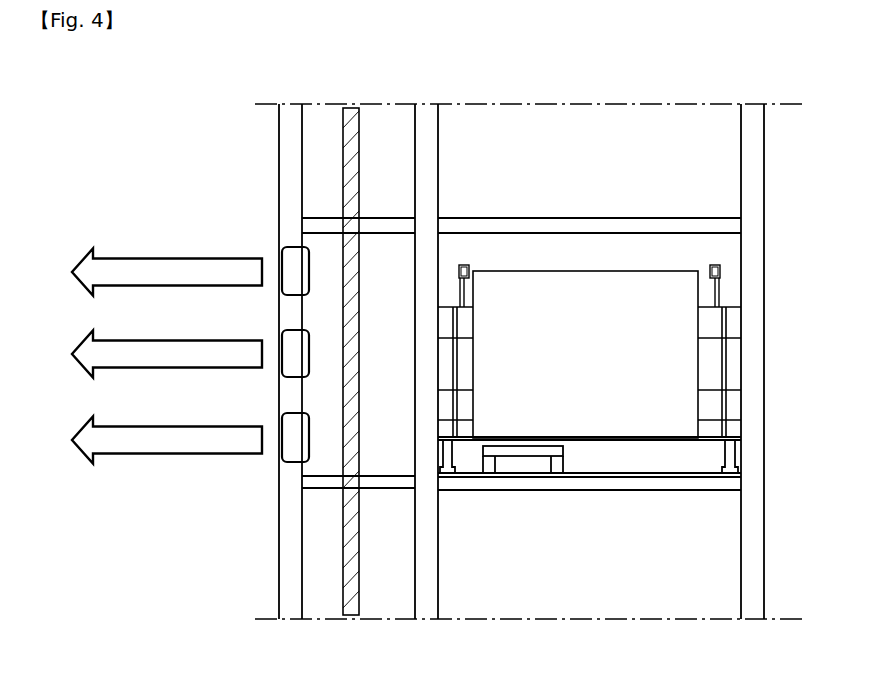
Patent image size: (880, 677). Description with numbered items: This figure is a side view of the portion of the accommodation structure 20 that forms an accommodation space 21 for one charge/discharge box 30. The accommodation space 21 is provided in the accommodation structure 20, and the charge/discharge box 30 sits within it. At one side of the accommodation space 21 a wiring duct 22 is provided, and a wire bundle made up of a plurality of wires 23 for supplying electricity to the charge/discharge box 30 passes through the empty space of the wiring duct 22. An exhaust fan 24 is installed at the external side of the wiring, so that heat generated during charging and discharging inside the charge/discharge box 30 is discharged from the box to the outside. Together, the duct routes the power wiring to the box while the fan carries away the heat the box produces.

The accommodation structure 20 is at (766, 438).
The accommodation space 21 is at (700, 252).
The wiring duct 22 is at (327, 458).
The wires 23 is at (348, 311).
The exhaust fan 24 is at (297, 370).
The charge/discharge box 30 is at (680, 353).